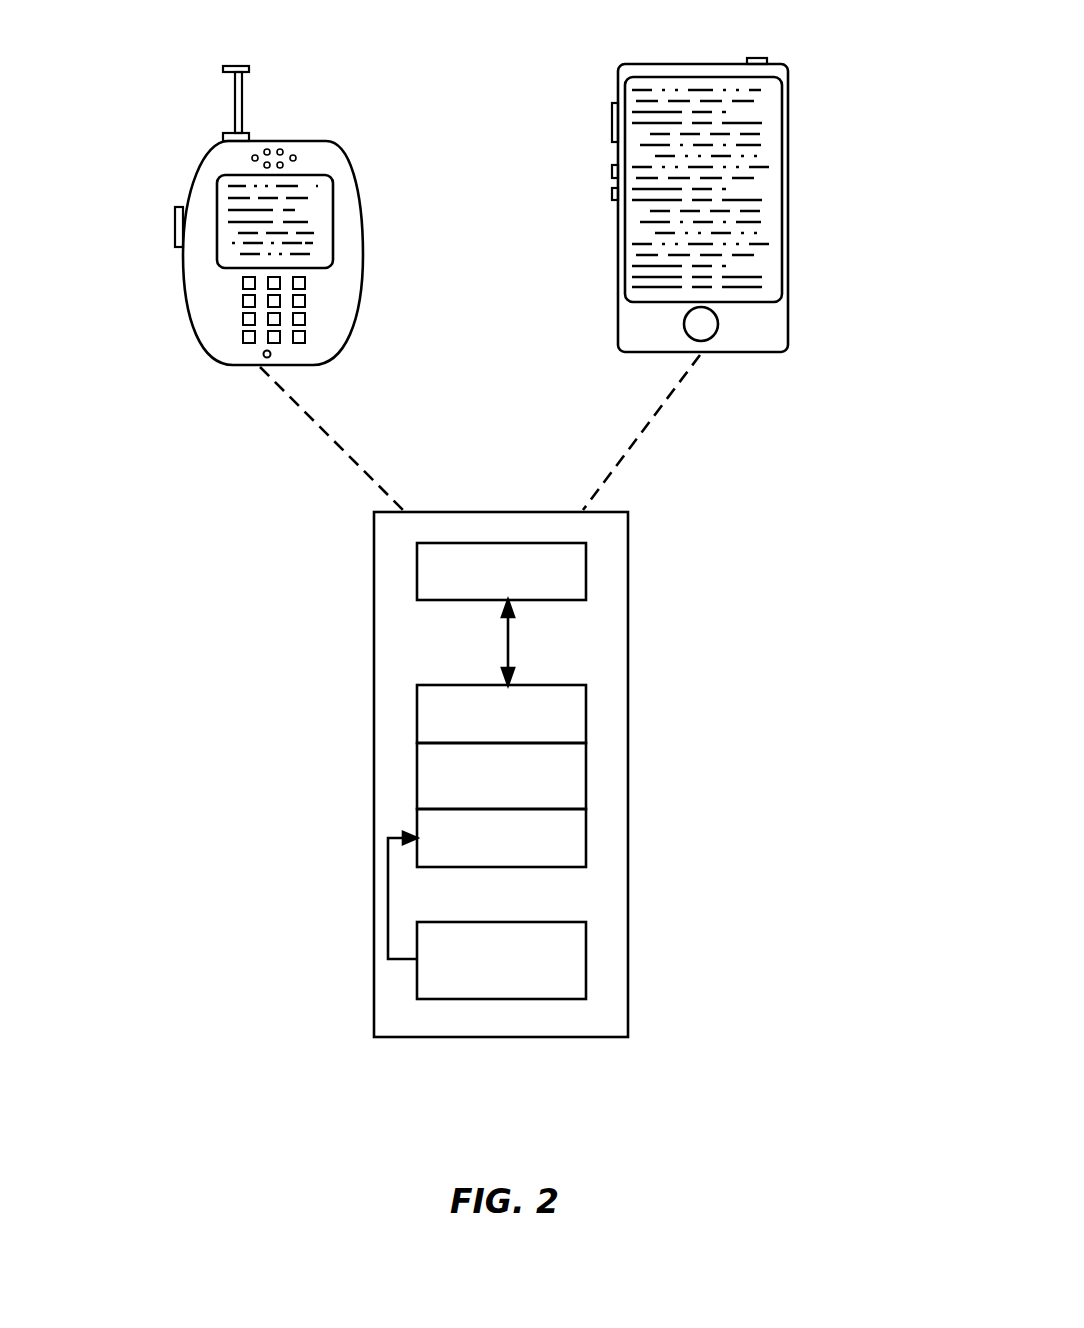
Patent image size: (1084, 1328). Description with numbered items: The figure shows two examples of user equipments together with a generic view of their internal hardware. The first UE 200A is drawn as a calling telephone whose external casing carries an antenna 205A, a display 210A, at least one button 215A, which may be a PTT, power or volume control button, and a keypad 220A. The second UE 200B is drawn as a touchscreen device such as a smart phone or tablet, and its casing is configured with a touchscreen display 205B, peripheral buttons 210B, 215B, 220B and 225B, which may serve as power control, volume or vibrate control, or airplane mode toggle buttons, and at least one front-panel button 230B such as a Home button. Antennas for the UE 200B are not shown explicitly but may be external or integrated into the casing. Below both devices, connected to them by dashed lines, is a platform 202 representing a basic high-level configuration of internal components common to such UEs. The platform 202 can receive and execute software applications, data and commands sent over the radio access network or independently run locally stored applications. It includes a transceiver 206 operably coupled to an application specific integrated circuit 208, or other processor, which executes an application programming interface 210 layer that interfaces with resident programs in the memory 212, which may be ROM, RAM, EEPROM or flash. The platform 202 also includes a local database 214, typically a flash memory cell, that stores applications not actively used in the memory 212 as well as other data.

The UE 200A is at (340, 340).
The antenna 205A is at (243, 92).
The display 210A is at (333, 222).
The button 215A is at (176, 229).
The keypad 220A is at (305, 299).
The UE 200B is at (663, 64).
The touchscreen display 205B is at (788, 100).
The peripheral button 210B is at (757, 58).
The peripheral button 215B is at (612, 122).
The peripheral button 220B is at (612, 172).
The peripheral button 225B is at (612, 193).
The front-panel button 230B is at (684, 324).
The platform 202 is at (374, 618).
The transceiver 206 is at (586, 568).
The application specific integrated circuit (ASIC) 208 is at (586, 712).
The application programming interface (API) 210 is at (586, 772).
The memory 212 is at (586, 836).
The local database 214 is at (586, 957).